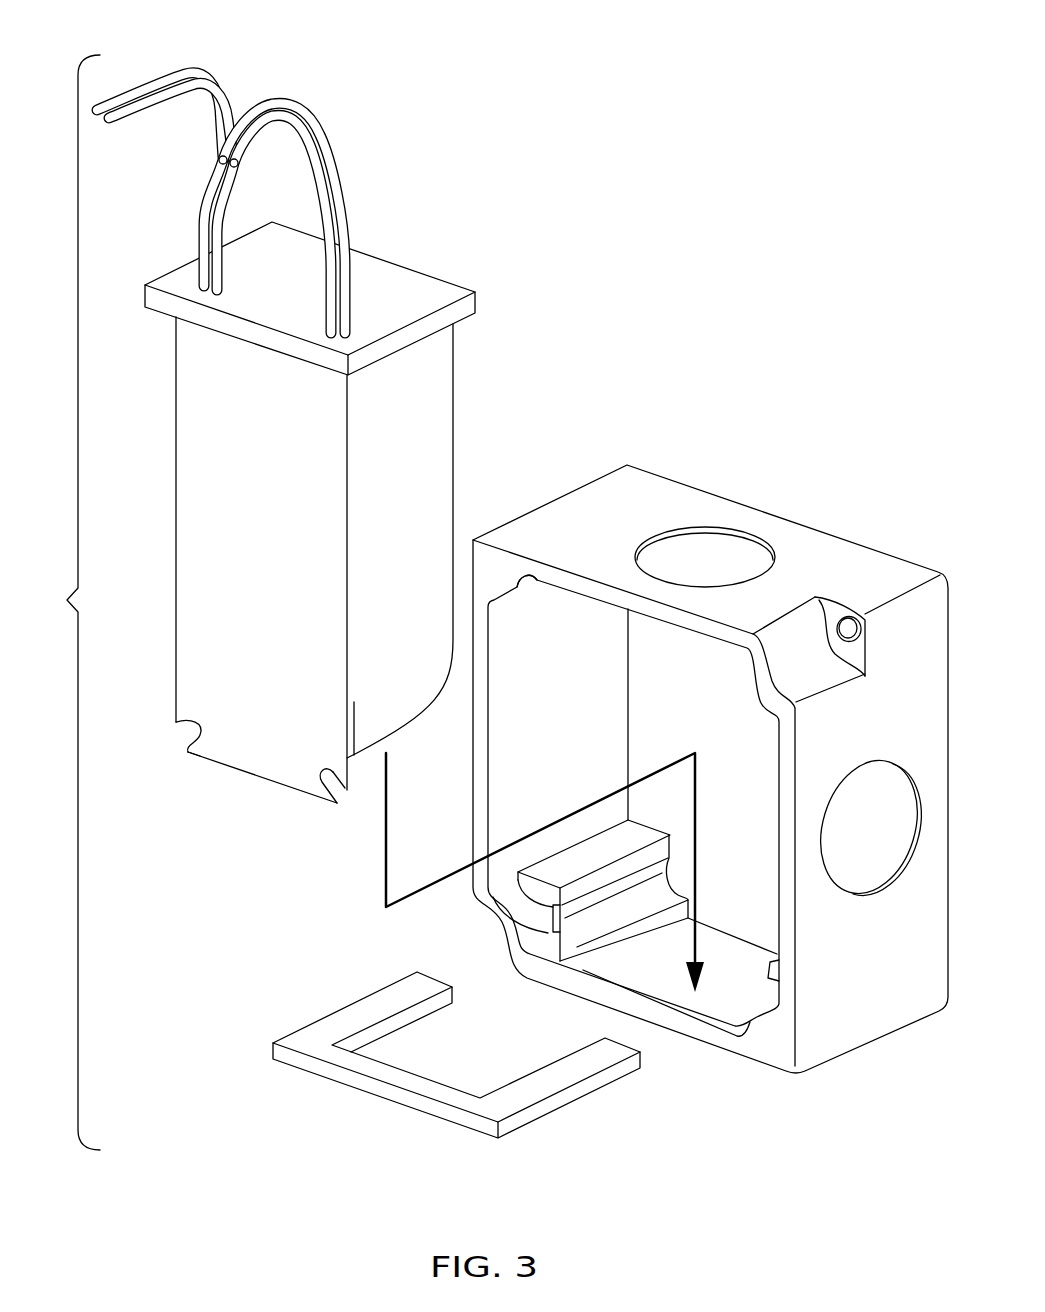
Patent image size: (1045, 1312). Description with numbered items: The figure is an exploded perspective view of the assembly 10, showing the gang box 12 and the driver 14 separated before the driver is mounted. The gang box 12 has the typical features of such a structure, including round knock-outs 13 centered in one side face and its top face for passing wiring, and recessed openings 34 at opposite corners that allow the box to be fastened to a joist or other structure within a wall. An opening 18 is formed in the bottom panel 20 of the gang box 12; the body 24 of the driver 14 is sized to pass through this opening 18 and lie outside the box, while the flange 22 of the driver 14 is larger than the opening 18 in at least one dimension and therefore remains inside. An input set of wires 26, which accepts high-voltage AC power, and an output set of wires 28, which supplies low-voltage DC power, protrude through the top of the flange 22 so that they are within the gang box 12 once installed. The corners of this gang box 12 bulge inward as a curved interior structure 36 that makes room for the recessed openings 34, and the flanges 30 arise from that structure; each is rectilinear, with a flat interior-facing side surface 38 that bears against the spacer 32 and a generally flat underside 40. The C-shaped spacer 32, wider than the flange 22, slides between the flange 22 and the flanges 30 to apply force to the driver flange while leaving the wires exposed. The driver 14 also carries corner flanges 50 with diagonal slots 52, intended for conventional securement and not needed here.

The assembly 10 is at (64, 602).
The gang box 12 is at (687, 772).
The round knock-outs 13 is at (705, 548).
The driver 14 is at (328, 551).
The opening 18 is at (727, 1006).
The bottom panel 20 is at (603, 932).
The flange 22 is at (460, 308).
The body 24 is at (318, 598).
The input set of wires 26 is at (148, 84).
The output set of wires 28 is at (262, 100).
The flanges 30 is at (486, 917).
The spacer 32 is at (378, 1086).
The recessed openings 34 is at (848, 625).
The curved interior structure 36 is at (531, 917).
The interior-facing side surface 38 is at (570, 918).
The underside 40 is at (553, 907).
The corner flanges 50 is at (182, 722).
The diagonal slots 52 is at (187, 754).